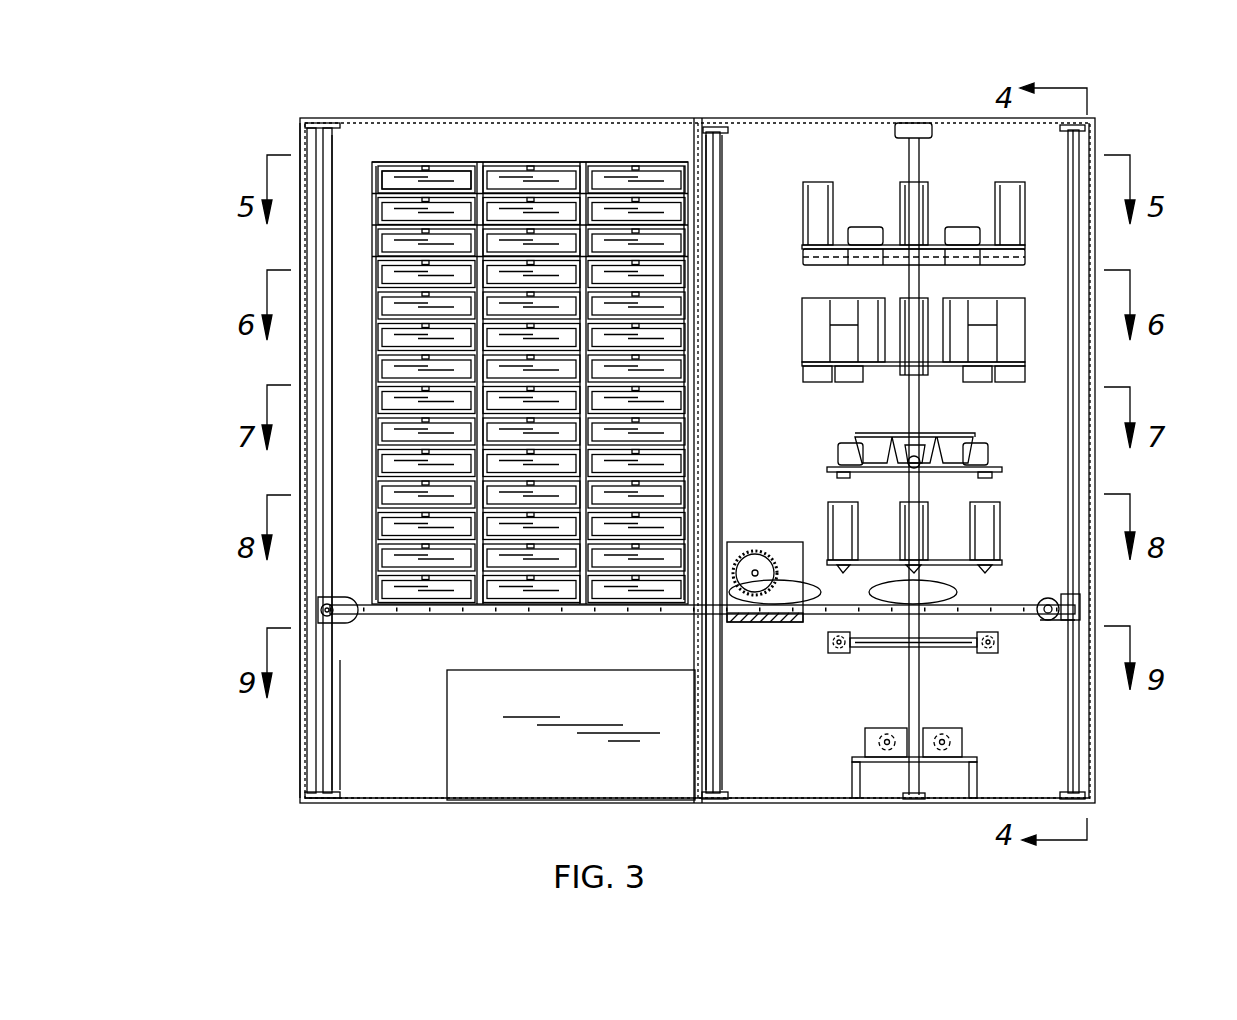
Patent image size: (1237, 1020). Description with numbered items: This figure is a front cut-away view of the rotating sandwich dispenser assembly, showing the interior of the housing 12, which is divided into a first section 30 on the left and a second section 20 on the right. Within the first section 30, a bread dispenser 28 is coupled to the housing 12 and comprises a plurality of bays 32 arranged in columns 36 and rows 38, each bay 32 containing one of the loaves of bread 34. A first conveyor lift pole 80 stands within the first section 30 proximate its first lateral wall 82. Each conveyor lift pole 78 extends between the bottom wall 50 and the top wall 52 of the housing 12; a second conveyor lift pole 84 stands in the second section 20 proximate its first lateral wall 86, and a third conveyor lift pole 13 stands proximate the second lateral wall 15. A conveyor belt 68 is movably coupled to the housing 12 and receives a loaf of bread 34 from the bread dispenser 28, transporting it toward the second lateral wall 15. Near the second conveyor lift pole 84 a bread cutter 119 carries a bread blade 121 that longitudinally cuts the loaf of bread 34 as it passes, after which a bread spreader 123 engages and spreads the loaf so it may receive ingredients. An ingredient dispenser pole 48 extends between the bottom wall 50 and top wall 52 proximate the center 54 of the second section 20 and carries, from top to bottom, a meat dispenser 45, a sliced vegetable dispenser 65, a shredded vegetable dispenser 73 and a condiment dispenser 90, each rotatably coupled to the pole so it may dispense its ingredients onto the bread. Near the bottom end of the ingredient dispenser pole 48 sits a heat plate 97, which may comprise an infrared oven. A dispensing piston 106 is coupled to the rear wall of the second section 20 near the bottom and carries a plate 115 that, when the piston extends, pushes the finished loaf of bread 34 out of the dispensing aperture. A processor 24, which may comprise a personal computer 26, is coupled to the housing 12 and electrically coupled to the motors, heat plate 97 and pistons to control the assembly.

The housing 12 is at (300, 118).
The third conveyor lift pole 13 is at (1060, 760).
The second lateral wall 15 is at (1096, 262).
The second section 20 is at (1015, 443).
The processor 24 is at (447, 775).
The personal computer 26 is at (432, 720).
The bread dispenser 28 is at (372, 163).
The first section 30 is at (435, 320).
The bays 32 is at (630, 222).
The loaves of bread 34 is at (1030, 583).
The columns 36 is at (515, 158).
The rows 38 is at (364, 214).
The meat dispenser 45 is at (1032, 223).
The ingredient dispenser pole 48 is at (921, 402).
The bottom wall 50 is at (843, 801).
The top wall 52 is at (935, 123).
The center 54 is at (853, 137).
The sliced vegetable dispenser 65 is at (1032, 334).
The conveyor belt 68 is at (1030, 628).
The shredded vegetable dispenser 73 is at (1008, 457).
The conveyor lift pole 78 is at (718, 162).
The first conveyor lift pole 80 is at (341, 702).
The first lateral wall 82 is at (300, 587).
The second conveyor lift pole 84 is at (736, 742).
The first lateral wall 86 is at (707, 205).
The condiment dispenser 90 is at (1013, 534).
The heat plate 97 is at (864, 662).
The dispensing piston 106 is at (930, 728).
The plate 115 is at (998, 722).
The bread cutter 119 is at (775, 590).
The bread blade 121 is at (745, 615).
The bread spreader 123 is at (792, 596).